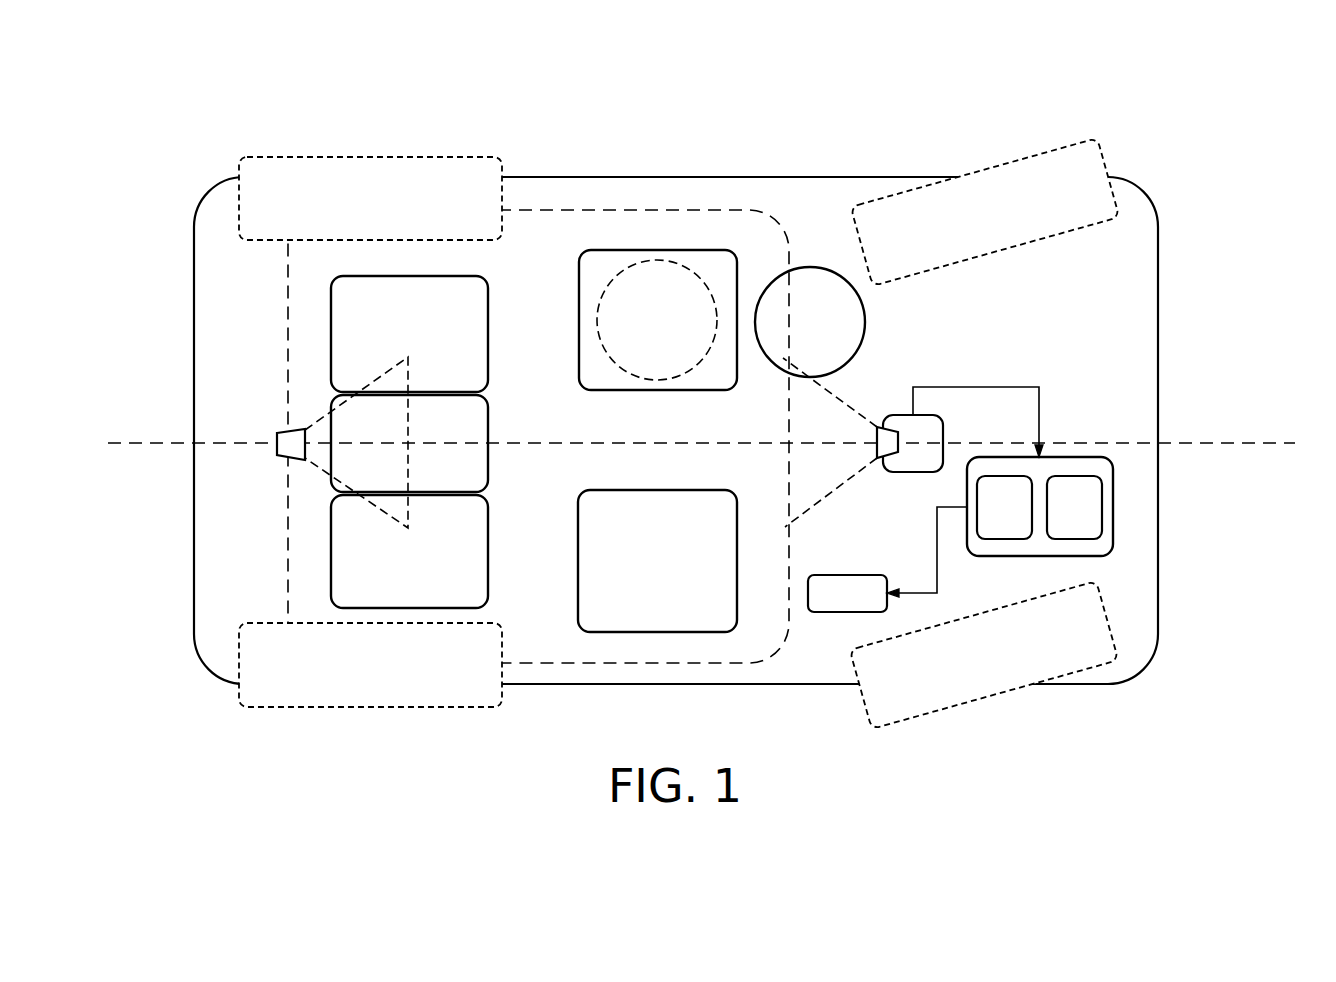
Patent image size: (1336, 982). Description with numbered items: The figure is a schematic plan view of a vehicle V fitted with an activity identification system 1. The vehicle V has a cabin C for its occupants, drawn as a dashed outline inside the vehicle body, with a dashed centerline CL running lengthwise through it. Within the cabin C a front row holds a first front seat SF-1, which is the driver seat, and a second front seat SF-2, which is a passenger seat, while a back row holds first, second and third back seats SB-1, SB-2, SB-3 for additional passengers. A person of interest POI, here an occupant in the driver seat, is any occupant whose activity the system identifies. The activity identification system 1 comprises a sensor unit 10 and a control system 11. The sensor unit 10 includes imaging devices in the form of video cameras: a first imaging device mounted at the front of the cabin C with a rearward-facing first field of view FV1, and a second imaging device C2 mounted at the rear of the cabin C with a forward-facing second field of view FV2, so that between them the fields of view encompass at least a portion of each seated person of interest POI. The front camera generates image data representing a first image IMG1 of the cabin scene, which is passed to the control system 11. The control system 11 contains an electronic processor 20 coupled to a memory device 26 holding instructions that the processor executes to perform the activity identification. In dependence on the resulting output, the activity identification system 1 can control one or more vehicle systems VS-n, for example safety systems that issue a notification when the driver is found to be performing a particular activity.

The vehicle V is at (454, 133).
The cabin C is at (594, 677).
The centerline CL is at (702, 429).
The first back seat SB-1 is at (385, 348).
The second back seat SB-2 is at (385, 457).
The third back seat SB-3 is at (385, 567).
The first front seat SF-1 is at (635, 333).
The second front seat SF-2 is at (636, 573).
The person of interest POI is at (657, 252).
The first field of view FV1 is at (847, 403).
The second field of view FV2 is at (317, 413).
The second imaging device C2 is at (268, 430).
The sensor unit 10 is at (914, 484).
The first image IMG1 is at (978, 408).
The control system 11 is at (1088, 506).
The electronic processor 20 is at (989, 520).
The memory device 26 is at (1060, 520).
The vehicle systems VS-n is at (824, 603).
The activity identification system 1 is at (706, 554).